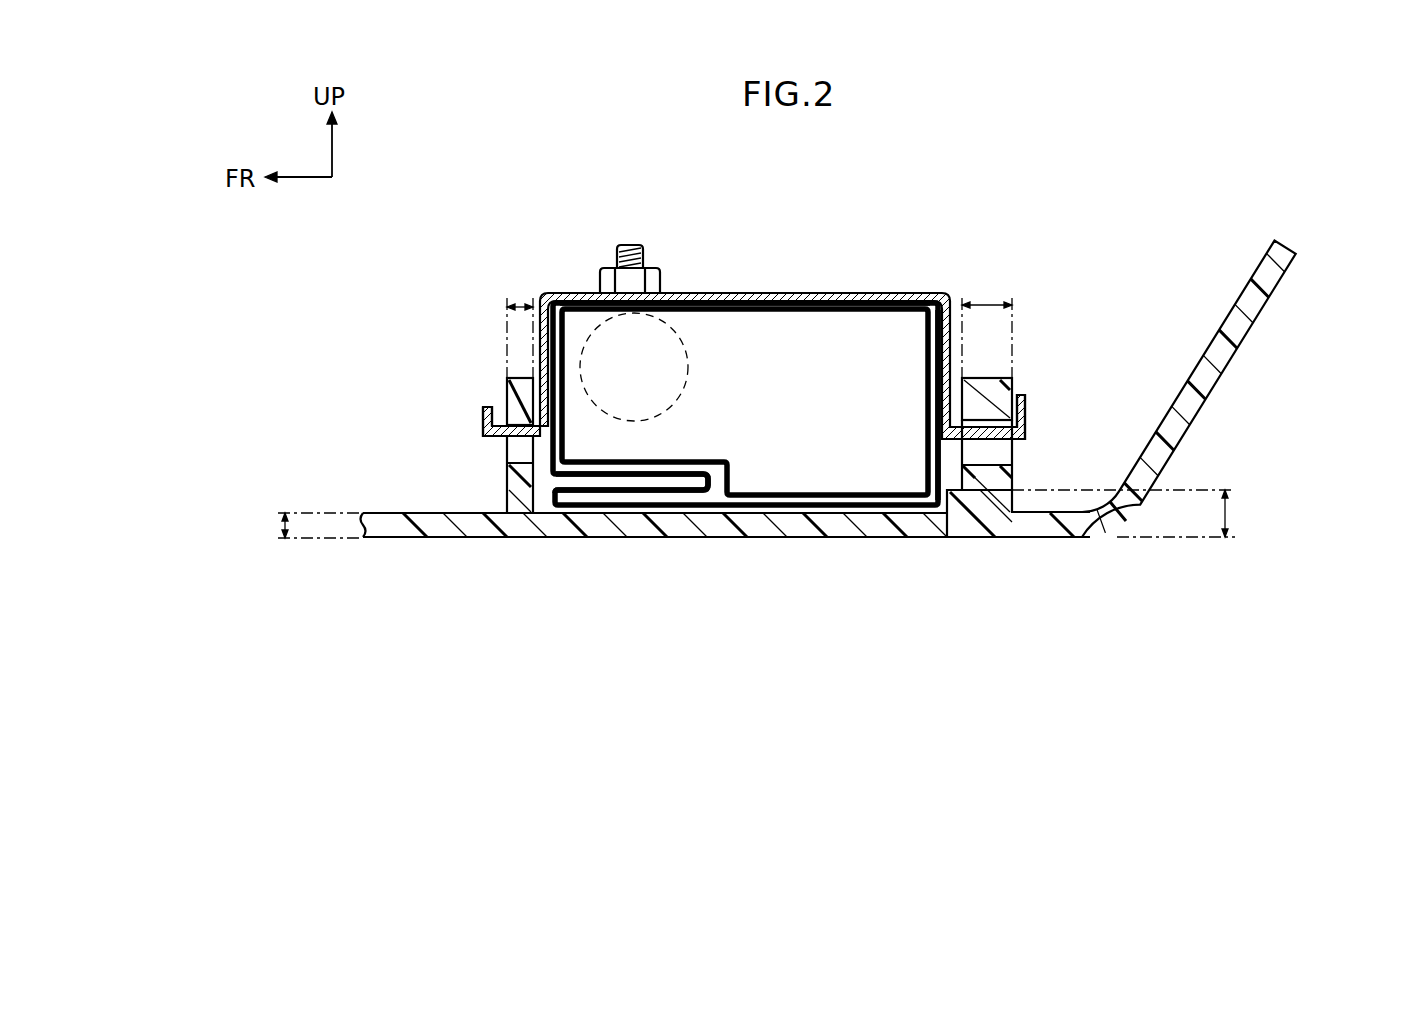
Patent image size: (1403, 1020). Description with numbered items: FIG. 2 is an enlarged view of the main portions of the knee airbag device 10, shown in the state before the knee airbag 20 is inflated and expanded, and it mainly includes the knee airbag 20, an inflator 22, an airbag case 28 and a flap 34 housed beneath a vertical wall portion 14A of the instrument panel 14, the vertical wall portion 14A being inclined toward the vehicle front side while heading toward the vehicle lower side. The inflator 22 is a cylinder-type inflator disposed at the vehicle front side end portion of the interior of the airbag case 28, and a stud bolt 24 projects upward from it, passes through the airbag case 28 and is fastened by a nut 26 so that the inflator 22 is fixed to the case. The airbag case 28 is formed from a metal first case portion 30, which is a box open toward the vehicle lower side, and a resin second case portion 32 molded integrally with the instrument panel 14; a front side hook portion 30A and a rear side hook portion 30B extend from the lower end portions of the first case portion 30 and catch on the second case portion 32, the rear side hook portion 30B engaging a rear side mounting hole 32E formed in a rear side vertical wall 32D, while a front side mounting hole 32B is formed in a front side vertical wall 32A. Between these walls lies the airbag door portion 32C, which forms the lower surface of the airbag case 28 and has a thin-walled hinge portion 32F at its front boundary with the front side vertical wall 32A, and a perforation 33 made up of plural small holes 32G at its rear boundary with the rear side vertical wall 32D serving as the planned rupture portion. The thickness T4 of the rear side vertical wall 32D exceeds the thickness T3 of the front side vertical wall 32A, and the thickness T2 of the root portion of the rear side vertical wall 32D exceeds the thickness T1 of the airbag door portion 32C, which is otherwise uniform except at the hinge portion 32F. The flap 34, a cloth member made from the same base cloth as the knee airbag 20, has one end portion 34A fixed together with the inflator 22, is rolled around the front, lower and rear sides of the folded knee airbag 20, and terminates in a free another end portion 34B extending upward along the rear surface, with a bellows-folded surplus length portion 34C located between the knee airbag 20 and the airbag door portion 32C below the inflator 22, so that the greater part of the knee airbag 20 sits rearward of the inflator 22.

The knee airbag device 10 is at (525, 230).
The instrument panel 14 is at (1204, 389).
The vertical wall portion 14A is at (1240, 357).
The knee airbag 20 is at (845, 310).
The inflator 22 is at (680, 340).
The stud bolt 24 is at (630, 243).
The nut 26 is at (600, 285).
The airbag case 28 is at (760, 427).
The first case portion 30 is at (937, 292).
The front side hook portion 30A is at (482, 418).
The rear side hook portion 30B is at (1025, 415).
The second case portion 32 is at (800, 550).
The front side vertical wall 32A is at (507, 400).
The front side mounting hole 32B is at (520, 463).
The airbag door portion 32C is at (613, 540).
The rear side vertical wall 32D is at (1012, 398).
The rear side mounting hole 32E is at (992, 463).
The hinge portion 32F is at (528, 513).
The small holes 32G is at (945, 538).
The perforation 33 is at (960, 555).
The flap 34 is at (703, 520).
The one end portion 34A is at (715, 298).
The another end portion 34B is at (930, 342).
The surplus length portion 34C is at (587, 508).
The thickness of the airbag door portion T1 is at (285, 525).
The thickness of the root portion of the rear side vertical wall T2 is at (1232, 518).
The thickness of the front side vertical wall T3 is at (520, 300).
The thickness of the rear side vertical wall T4 is at (987, 303).